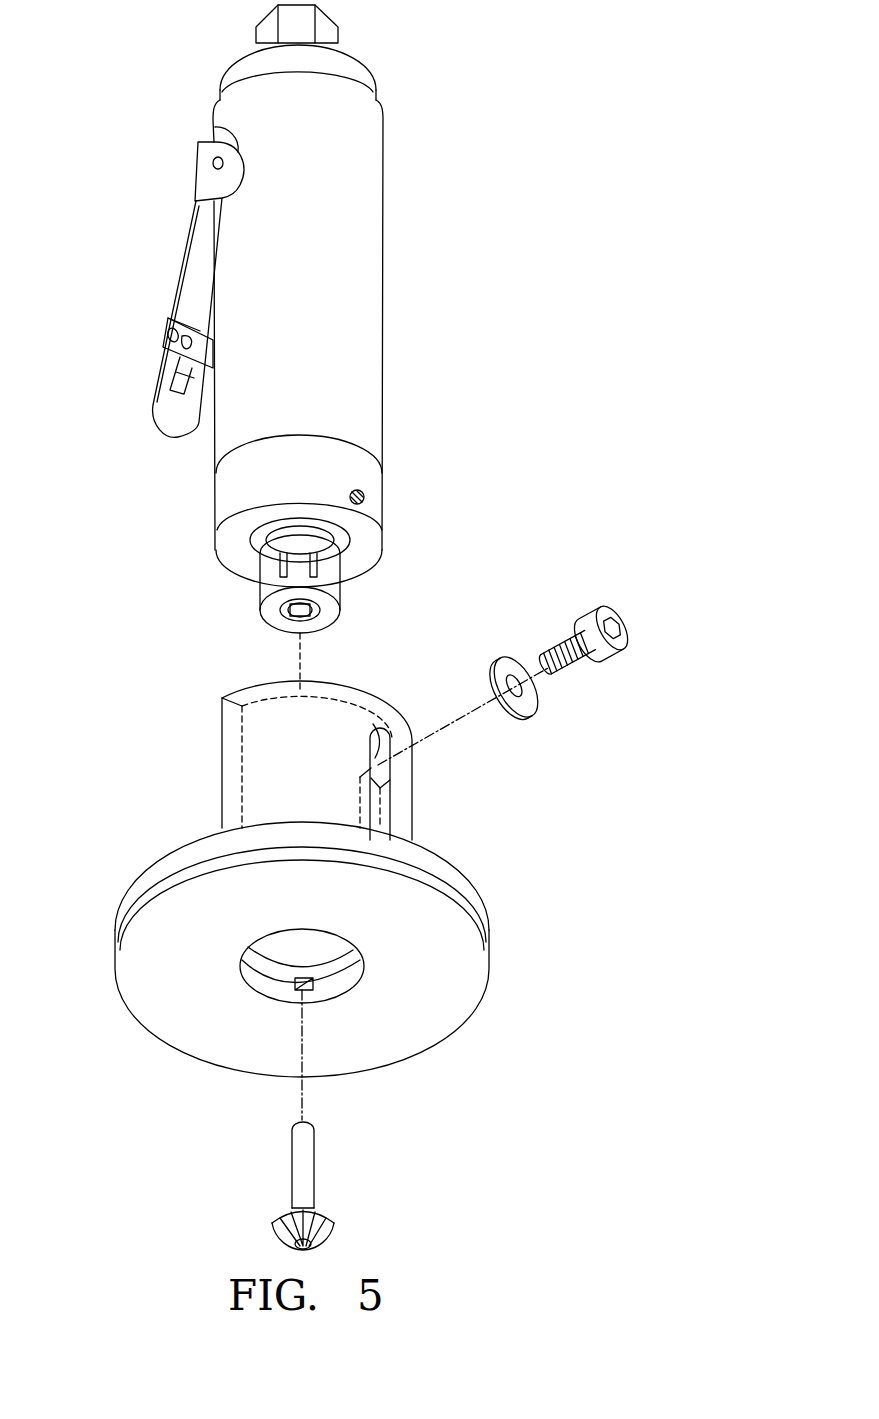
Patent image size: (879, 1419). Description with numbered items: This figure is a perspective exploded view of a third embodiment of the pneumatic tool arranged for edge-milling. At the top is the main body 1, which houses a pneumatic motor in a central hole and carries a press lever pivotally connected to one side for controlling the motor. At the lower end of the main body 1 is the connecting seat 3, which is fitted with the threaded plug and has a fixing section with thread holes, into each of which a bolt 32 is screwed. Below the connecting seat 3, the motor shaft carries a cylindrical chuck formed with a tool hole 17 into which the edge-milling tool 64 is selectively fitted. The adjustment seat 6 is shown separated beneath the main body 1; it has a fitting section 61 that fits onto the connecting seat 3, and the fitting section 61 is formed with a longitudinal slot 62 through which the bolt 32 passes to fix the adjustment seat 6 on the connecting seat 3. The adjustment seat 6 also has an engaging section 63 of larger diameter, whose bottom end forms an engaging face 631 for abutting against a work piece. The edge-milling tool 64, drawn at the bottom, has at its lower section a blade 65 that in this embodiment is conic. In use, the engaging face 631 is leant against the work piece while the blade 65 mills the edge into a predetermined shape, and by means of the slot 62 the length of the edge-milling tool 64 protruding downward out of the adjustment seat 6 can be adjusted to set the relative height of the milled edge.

The main body 1 is at (365, 300).
The connecting seat 3 is at (340, 472).
The tool hole 17 is at (302, 613).
The bolt 32 is at (590, 630).
The adjustment seat 6 is at (160, 737).
The fitting section 61 is at (275, 768).
The longitudinal slot 62 is at (375, 746).
The engaging section 63 is at (264, 969).
The engaging face 631 is at (172, 975).
The edge-milling tool 64 is at (303, 1167).
The blade 65 is at (325, 1243).